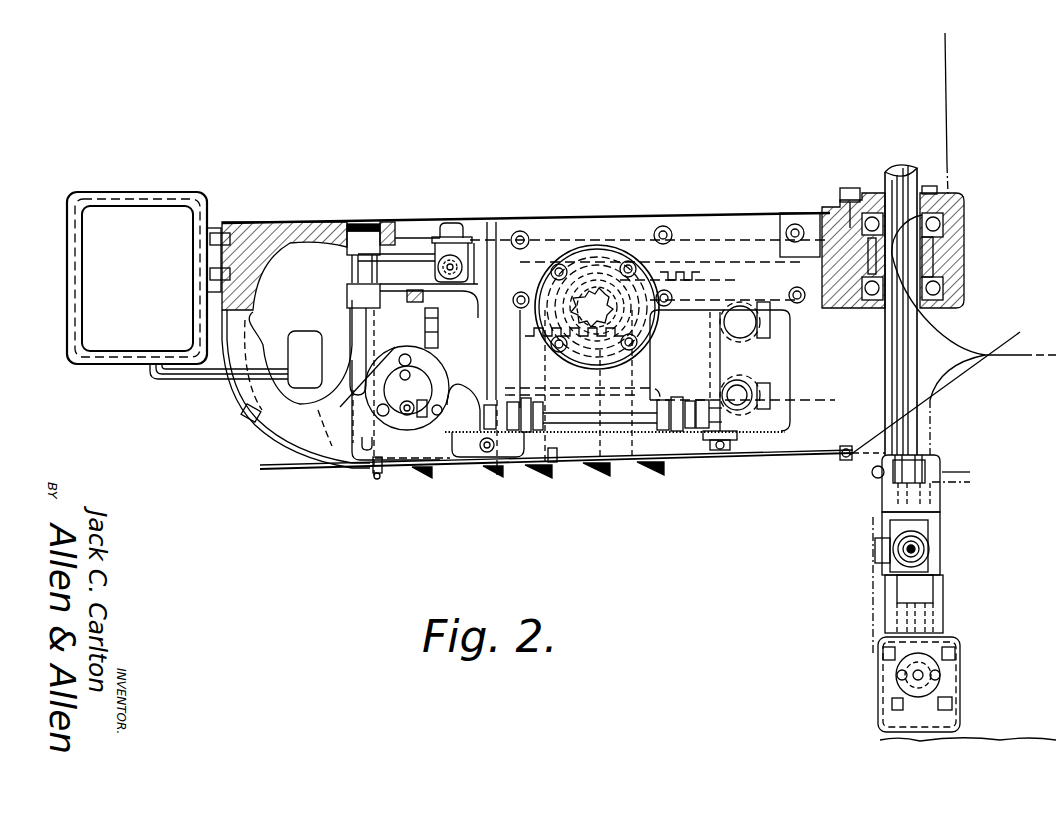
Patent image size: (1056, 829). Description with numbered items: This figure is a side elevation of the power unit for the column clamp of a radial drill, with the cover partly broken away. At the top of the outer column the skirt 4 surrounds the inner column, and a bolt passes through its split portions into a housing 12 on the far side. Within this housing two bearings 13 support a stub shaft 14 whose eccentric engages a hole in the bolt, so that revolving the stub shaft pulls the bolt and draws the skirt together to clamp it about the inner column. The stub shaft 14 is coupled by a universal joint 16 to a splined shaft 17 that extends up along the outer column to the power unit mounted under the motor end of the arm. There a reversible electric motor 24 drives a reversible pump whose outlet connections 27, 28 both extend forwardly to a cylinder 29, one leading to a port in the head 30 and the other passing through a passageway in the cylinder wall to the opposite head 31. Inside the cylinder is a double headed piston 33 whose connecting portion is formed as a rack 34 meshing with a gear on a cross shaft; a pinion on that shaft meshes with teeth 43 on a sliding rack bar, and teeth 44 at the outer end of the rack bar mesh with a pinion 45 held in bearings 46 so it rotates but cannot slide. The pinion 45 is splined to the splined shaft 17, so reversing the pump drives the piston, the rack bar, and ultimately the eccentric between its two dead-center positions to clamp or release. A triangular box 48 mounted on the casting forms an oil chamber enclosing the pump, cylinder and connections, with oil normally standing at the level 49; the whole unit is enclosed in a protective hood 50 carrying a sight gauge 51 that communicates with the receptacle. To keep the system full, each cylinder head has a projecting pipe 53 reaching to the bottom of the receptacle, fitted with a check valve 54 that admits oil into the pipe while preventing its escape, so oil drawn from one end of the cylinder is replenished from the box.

The skirt 4 is at (974, 335).
The housing 12 is at (960, 670).
The bearings 13 is at (960, 640).
The stub shaft 14 is at (945, 620).
The universal joint 16 is at (937, 522).
The splined shaft 17 is at (920, 327).
The reversible electric motor 24 is at (342, 378).
The outlet connection 27 is at (745, 330).
The outlet connection 28 is at (793, 400).
The cylinder 29 is at (665, 365).
The head 30 is at (743, 363).
The head 31 is at (450, 333).
The double headed piston 33 is at (615, 470).
The rack 34 is at (545, 410).
The teeth 43 is at (670, 290).
The teeth 44 is at (840, 308).
The pinion 45 is at (927, 249).
The bearings 46 is at (955, 200).
The triangular box 48 is at (770, 432).
The oil level 49 is at (787, 400).
The hood 50 is at (700, 455).
The sight gauge 51 is at (450, 330).
The projecting pipe 53 is at (484, 405).
The check valve 54 is at (525, 420).